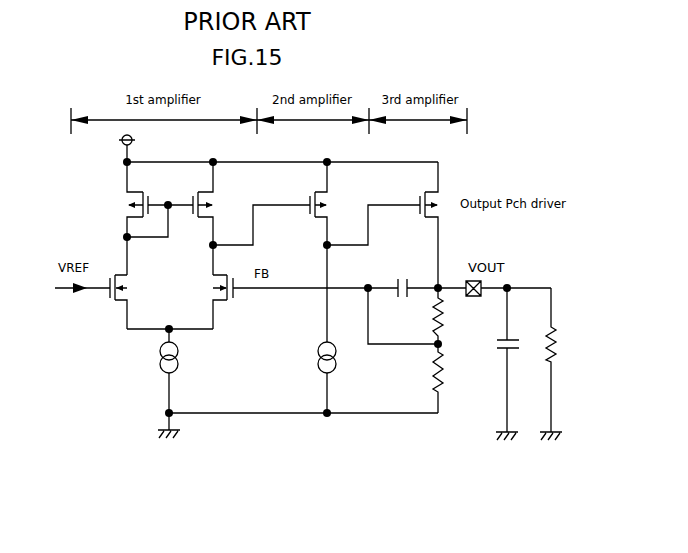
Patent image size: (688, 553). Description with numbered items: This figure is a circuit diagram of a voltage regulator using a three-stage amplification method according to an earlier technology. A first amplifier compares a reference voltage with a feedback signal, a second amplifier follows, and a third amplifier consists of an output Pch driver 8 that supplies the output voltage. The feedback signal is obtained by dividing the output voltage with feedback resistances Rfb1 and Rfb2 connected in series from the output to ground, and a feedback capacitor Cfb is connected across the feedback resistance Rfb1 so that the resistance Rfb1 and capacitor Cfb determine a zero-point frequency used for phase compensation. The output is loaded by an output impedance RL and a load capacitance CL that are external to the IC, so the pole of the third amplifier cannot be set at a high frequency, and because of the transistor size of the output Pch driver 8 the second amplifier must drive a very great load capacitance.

The output Pch driver 8 is at (452, 193).
The feedback capacitor Cfb is at (403, 297).
The feedback resistance Rfb1 is at (453, 316).
The feedback resistance Rfb2 is at (453, 378).
The load capacitance CL is at (517, 360).
The output impedance RL is at (563, 360).